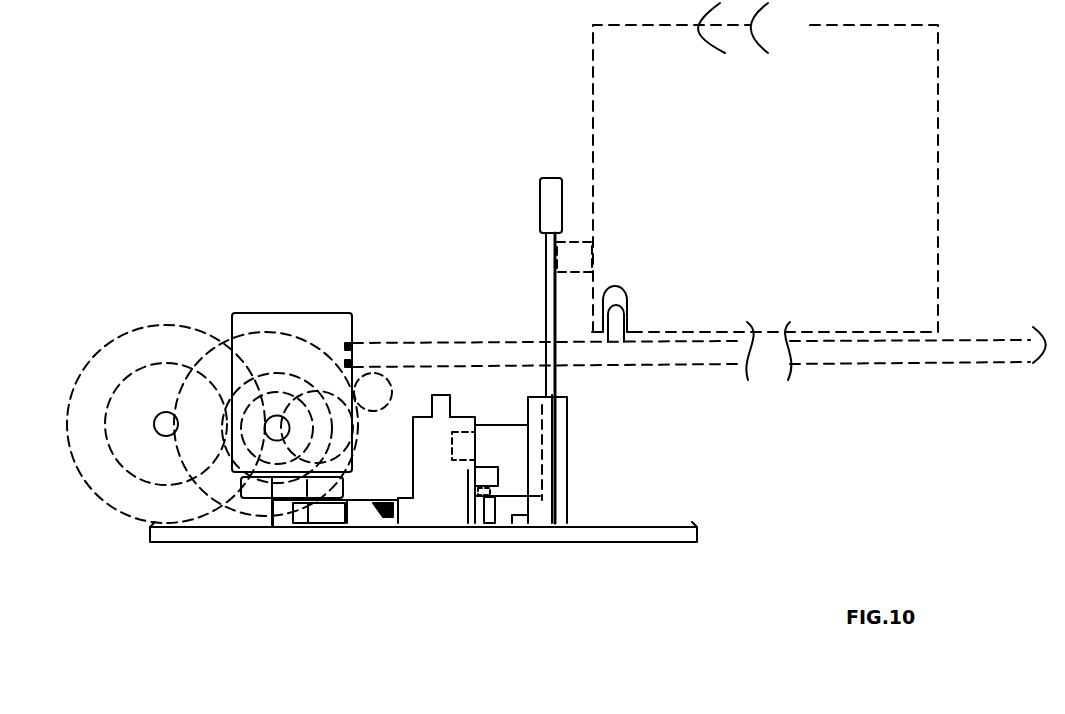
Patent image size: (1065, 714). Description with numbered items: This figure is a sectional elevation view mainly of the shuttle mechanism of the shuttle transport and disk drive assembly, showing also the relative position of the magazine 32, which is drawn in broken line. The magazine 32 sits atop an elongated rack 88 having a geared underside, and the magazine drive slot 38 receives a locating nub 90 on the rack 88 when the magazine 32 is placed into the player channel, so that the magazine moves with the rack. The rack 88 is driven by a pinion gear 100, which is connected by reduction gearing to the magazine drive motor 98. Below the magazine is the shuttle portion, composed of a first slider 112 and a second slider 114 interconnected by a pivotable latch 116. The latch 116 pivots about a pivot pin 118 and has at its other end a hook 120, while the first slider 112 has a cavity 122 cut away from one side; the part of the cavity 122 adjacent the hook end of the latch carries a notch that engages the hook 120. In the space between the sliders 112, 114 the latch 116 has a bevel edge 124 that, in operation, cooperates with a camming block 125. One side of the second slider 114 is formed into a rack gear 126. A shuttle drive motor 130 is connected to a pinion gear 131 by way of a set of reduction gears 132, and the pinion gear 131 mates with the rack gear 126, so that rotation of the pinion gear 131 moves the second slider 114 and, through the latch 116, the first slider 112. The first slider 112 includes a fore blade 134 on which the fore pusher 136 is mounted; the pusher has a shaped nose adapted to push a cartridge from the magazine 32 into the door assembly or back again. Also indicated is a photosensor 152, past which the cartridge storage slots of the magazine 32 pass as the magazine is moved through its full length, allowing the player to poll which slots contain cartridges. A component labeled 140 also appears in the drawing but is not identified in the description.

The magazine 32 is at (923, 123).
The magazine drive slot 38 is at (617, 288).
The rack 88 is at (822, 362).
The locating nub 90 is at (636, 329).
The magazine drive motor 98 is at (166, 360).
The pinion gear 100 is at (379, 412).
The first slider 112 is at (567, 475).
The second slider 114 is at (440, 463).
The latch 116 is at (505, 430).
The pivot pin 118 is at (462, 452).
The hook 120 is at (567, 438).
The cavity 122 is at (567, 400).
The bevel edge 124 is at (470, 480).
The camming block 125 is at (492, 512).
The rack gear 126 is at (410, 526).
The shuttle drive motor 130 is at (282, 314).
The pinion gear 131 is at (380, 528).
The reduction gears 132 is at (258, 526).
The fore blade 134 is at (548, 297).
The fore pusher 136 is at (545, 197).
The arm 140 is at (437, 394).
The photosensor 152 is at (572, 242).